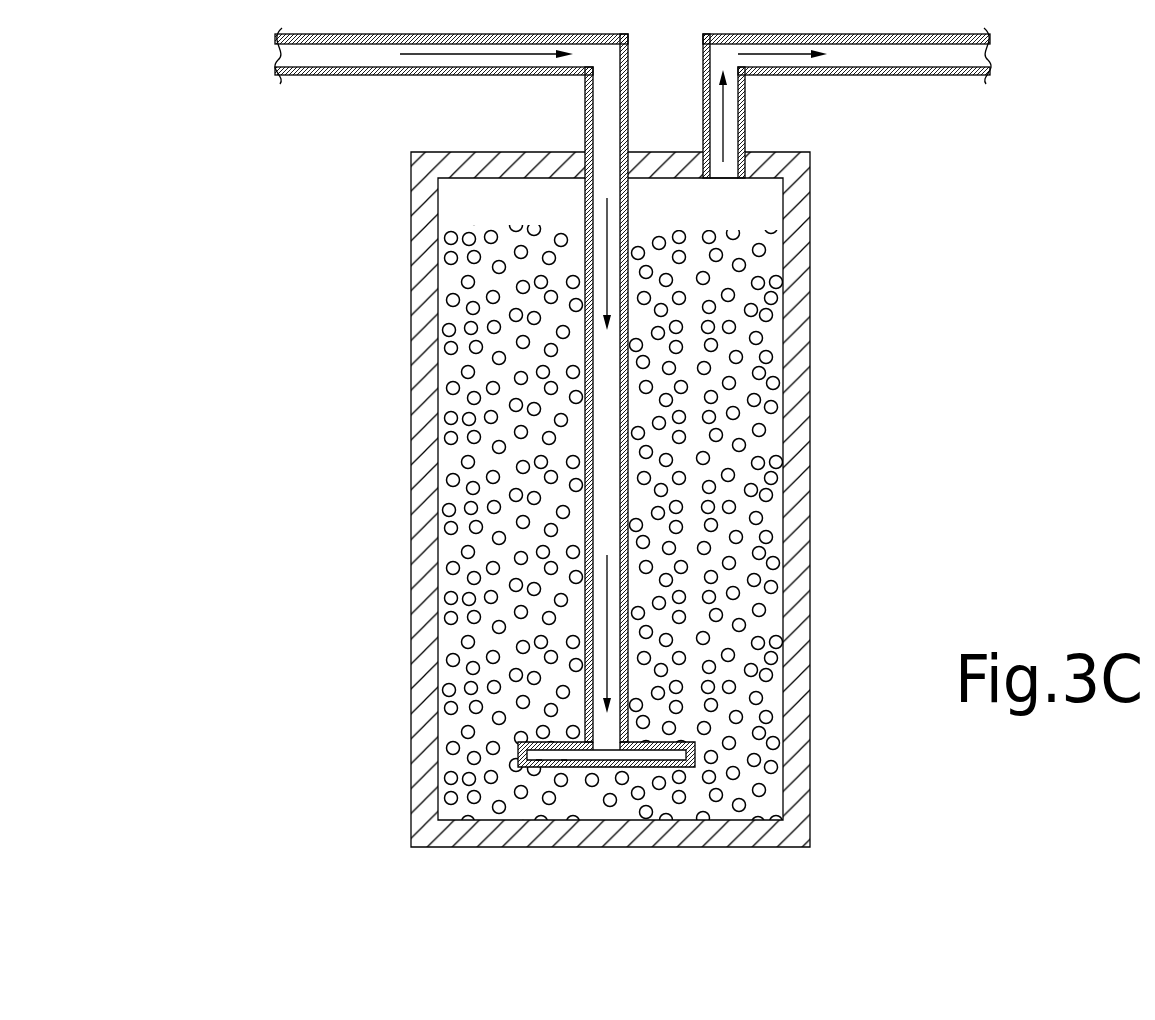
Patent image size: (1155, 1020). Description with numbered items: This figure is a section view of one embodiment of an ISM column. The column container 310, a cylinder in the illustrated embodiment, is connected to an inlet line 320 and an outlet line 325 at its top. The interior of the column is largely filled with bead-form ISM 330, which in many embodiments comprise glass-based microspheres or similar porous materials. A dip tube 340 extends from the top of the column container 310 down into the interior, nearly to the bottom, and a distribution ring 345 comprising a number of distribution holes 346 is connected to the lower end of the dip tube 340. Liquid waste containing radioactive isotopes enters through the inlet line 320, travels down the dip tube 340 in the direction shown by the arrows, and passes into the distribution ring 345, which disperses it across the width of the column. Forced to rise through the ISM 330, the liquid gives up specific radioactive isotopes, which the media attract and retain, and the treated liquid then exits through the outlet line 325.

The column container 310 is at (797, 492).
The inlet line 320 is at (377, 77).
The outlet line 325 is at (938, 77).
The bead-form ISM 330 is at (500, 448).
The dip tube 340 is at (627, 408).
The distribution ring 345 is at (513, 745).
The distribution holes 346 is at (538, 768).